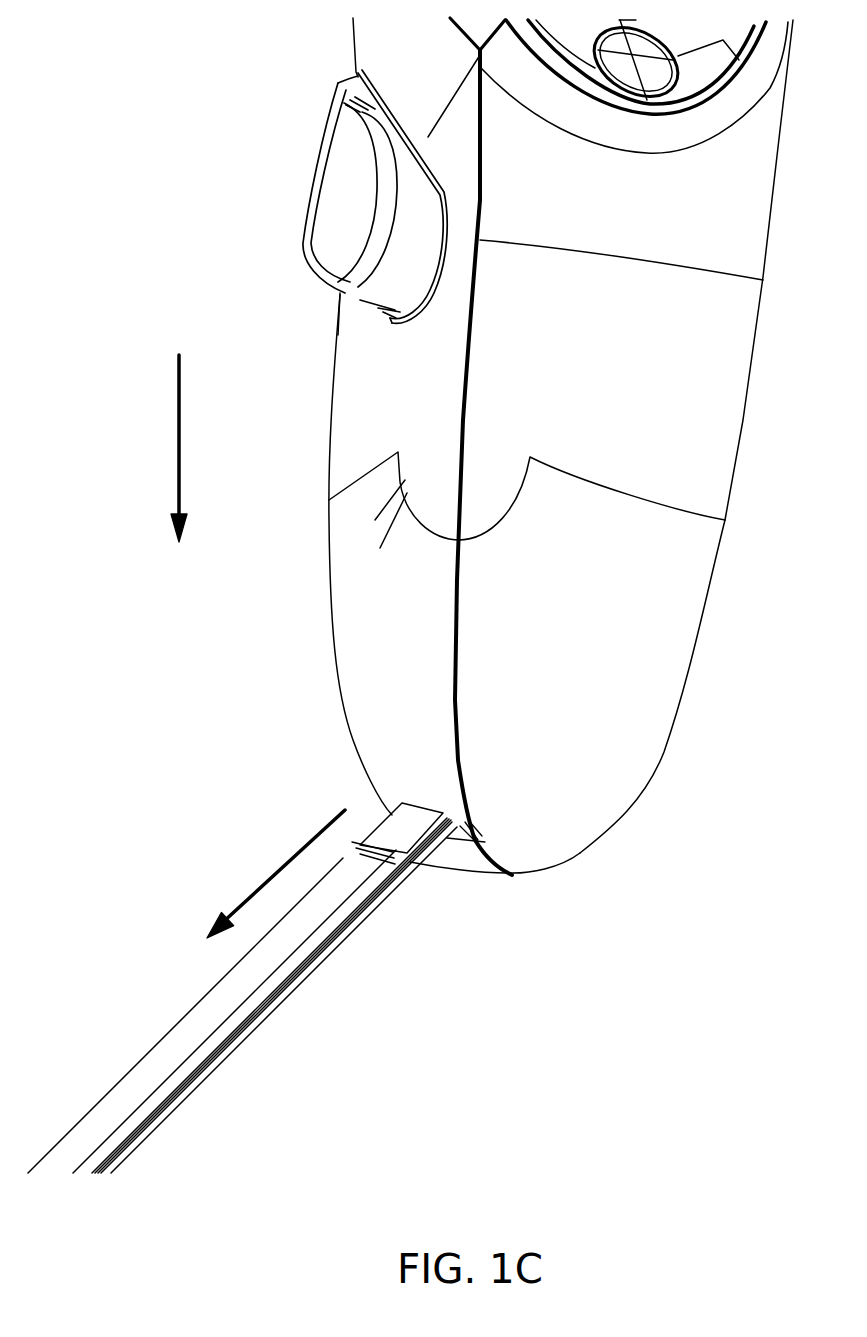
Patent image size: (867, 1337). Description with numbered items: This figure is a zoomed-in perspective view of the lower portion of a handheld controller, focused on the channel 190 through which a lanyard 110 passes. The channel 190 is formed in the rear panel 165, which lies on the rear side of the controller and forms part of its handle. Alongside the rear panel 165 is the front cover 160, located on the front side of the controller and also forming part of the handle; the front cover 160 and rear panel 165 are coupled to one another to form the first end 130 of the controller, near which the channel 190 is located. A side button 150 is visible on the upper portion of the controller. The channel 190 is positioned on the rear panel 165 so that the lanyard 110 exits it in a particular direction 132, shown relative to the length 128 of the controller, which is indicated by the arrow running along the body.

The lanyard 110 is at (132, 1090).
The length of the controller 128 is at (168, 457).
The first end 130 is at (493, 875).
The particular direction 132 is at (264, 872).
The side button 150 is at (322, 208).
The front cover 160 is at (662, 700).
The rear panel 165 is at (350, 603).
The channel 190 is at (455, 832).